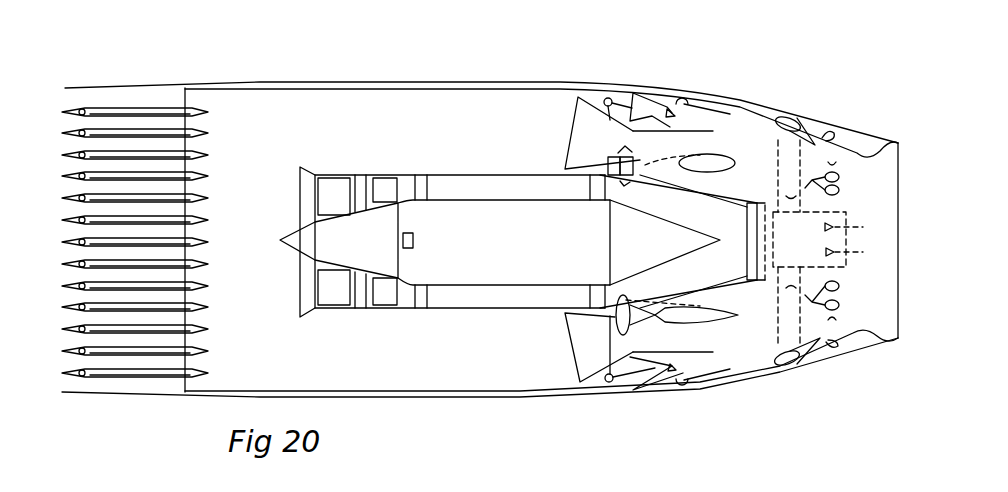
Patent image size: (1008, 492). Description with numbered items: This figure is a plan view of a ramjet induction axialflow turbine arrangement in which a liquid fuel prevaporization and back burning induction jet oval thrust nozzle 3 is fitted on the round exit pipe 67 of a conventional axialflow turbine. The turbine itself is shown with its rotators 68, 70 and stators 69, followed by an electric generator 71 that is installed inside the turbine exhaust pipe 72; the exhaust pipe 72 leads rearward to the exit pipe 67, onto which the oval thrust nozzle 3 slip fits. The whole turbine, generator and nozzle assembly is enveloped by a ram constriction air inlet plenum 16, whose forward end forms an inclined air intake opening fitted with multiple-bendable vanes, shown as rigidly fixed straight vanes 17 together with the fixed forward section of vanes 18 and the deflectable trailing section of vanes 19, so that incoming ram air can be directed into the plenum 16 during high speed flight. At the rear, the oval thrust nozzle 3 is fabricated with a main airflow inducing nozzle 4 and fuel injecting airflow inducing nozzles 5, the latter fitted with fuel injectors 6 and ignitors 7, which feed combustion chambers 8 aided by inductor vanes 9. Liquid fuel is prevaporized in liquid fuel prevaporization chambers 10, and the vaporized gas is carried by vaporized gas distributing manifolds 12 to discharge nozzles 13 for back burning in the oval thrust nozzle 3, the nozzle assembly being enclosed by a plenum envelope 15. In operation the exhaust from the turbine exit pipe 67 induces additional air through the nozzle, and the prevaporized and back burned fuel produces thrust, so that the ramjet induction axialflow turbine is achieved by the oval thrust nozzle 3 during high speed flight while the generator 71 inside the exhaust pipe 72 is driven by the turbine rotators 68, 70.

The oval thrust nozzle 3 is at (896, 212).
The main airflow inducing nozzle 4 is at (592, 110).
The fuel injecting airflow inducing nozzle 5 is at (634, 108).
The fuel injector 6 is at (668, 106).
The ignitor 7 is at (688, 103).
The combustion chamber 8 is at (725, 128).
The inductor vane 9 is at (833, 157).
The liquid fuel prevaporization chamber 10 is at (847, 246).
The vaporized gas distributing manifold 12 is at (786, 117).
The discharge nozzle 13 is at (817, 142).
The plenum envelope 15 is at (773, 373).
The ram constriction air inlet plenum 16 is at (480, 239).
The rigidly fixed straight vane 17 is at (202, 240).
The fixed forward section of vane 18 is at (78, 112).
The deflectable trailing section of vane 19 is at (86, 112).
The exit pipe 67 is at (747, 228).
The rotator 68 is at (337, 185).
The stator 69 is at (362, 182).
The rotator 70 is at (388, 185).
The electric generator 71 is at (460, 213).
The turbine exhaust pipe 72 is at (515, 187).